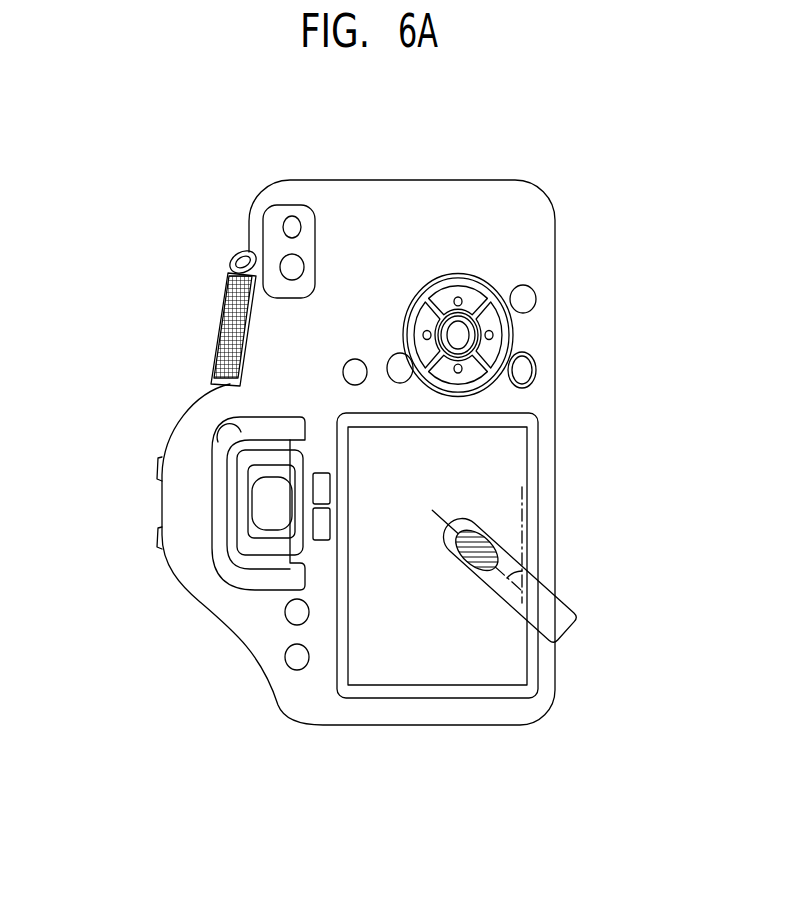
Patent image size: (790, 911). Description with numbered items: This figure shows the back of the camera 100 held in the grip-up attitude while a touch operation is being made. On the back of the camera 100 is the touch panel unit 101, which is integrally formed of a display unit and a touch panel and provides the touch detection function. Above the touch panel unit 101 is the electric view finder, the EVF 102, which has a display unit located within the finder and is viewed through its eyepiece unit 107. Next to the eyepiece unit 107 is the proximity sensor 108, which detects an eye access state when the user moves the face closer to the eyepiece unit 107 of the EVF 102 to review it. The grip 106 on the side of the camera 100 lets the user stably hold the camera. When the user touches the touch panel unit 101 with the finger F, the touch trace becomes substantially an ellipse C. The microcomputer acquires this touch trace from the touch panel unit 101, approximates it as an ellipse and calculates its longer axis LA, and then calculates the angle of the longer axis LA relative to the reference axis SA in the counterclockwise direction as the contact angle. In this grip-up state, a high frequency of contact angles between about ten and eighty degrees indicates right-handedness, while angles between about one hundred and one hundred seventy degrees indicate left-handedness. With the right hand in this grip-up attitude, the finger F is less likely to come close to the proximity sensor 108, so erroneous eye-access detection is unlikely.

The camera 100 is at (371, 450).
The touch panel unit 101 is at (493, 448).
The electric view finder (EVF) 102 is at (270, 518).
The grip 106 is at (380, 180).
The eyepiece unit 107 is at (267, 460).
The proximity sensor 108 is at (313, 507).
The finger F is at (544, 611).
The ellipse C is at (492, 558).
The longer axis LA is at (440, 517).
The reference axis SA is at (527, 511).